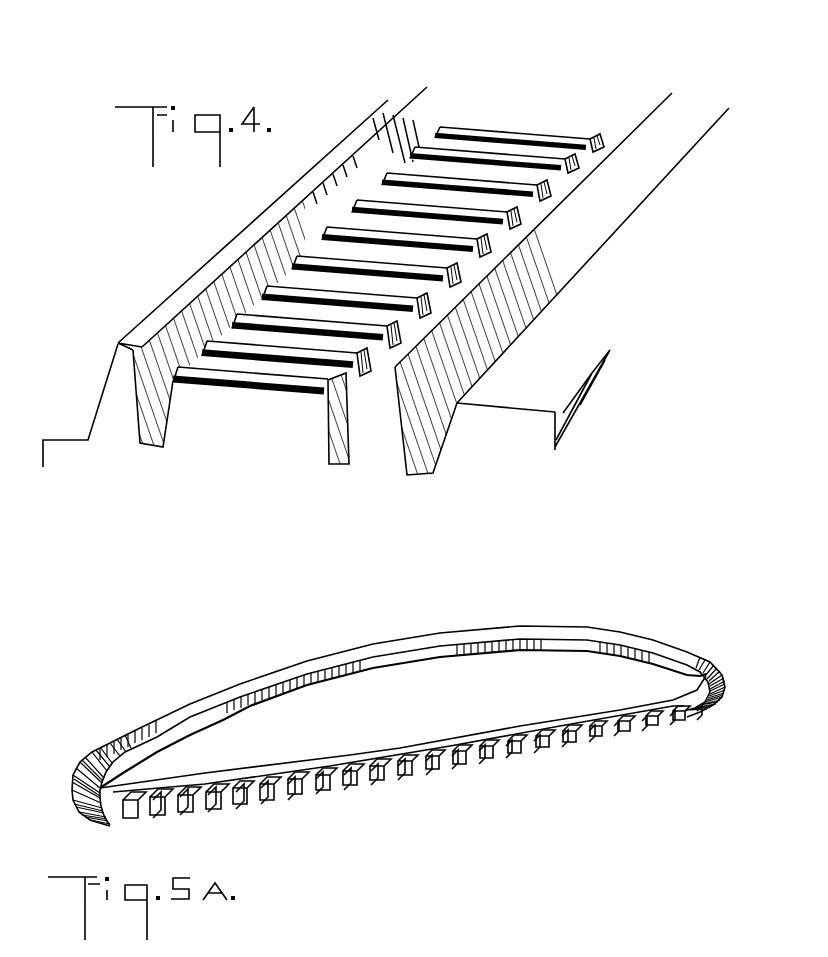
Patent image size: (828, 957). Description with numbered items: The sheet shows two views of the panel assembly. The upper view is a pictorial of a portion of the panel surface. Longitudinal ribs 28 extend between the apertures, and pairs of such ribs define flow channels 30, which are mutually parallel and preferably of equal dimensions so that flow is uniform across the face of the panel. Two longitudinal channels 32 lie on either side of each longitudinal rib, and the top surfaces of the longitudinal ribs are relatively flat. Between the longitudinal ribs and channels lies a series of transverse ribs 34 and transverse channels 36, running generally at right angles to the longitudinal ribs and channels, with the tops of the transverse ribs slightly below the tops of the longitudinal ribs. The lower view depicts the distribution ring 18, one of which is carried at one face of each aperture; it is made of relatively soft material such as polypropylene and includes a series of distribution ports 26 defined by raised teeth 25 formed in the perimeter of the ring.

In FIG. 5A, the distribution ring 18 is at (563, 630).
In FIG. 5A, the raised teeth 25 is at (245, 804).
In FIG. 5A, the distribution ports 26 is at (677, 717).
In FIG. 4, the longitudinal ribs 28 is at (117, 338).
In FIG. 4, the flow channels 30 is at (644, 85).
In FIG. 4, the longitudinal channels 32 is at (141, 347).
In FIG. 4, the transverse ribs 34 is at (246, 322).
In FIG. 4, the transverse channels 36 is at (342, 408).